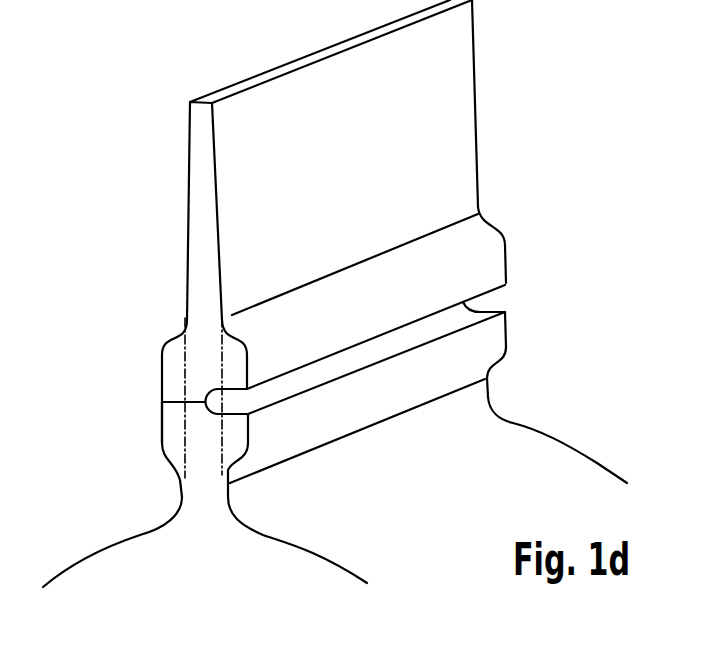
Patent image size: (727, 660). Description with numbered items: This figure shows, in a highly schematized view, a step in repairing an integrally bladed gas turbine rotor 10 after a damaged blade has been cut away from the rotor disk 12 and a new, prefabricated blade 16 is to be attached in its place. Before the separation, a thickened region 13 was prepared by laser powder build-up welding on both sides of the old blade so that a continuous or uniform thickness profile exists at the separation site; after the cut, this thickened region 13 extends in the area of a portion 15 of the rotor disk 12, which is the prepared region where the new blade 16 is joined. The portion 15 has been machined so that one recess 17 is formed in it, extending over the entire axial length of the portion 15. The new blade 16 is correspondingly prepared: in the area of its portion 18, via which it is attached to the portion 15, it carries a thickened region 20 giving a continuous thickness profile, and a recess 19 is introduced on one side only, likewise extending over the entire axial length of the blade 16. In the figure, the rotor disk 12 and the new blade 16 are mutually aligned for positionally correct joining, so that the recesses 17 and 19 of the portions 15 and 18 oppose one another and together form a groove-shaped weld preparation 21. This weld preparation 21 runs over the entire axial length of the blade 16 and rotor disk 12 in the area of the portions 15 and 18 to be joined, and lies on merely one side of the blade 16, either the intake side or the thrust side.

The gas turbine rotor 10 is at (160, 593).
The rotor disk 12 is at (303, 567).
The thickened region 13 is at (235, 447).
The portion of rotor disk 15 is at (157, 430).
The new blade 16 is at (450, 127).
The recess 17 is at (238, 418).
The portion of blade 18 is at (157, 375).
The recess 19 is at (232, 384).
The thickened region 20 is at (175, 352).
The groove-shaped weld preparation 21 is at (204, 410).